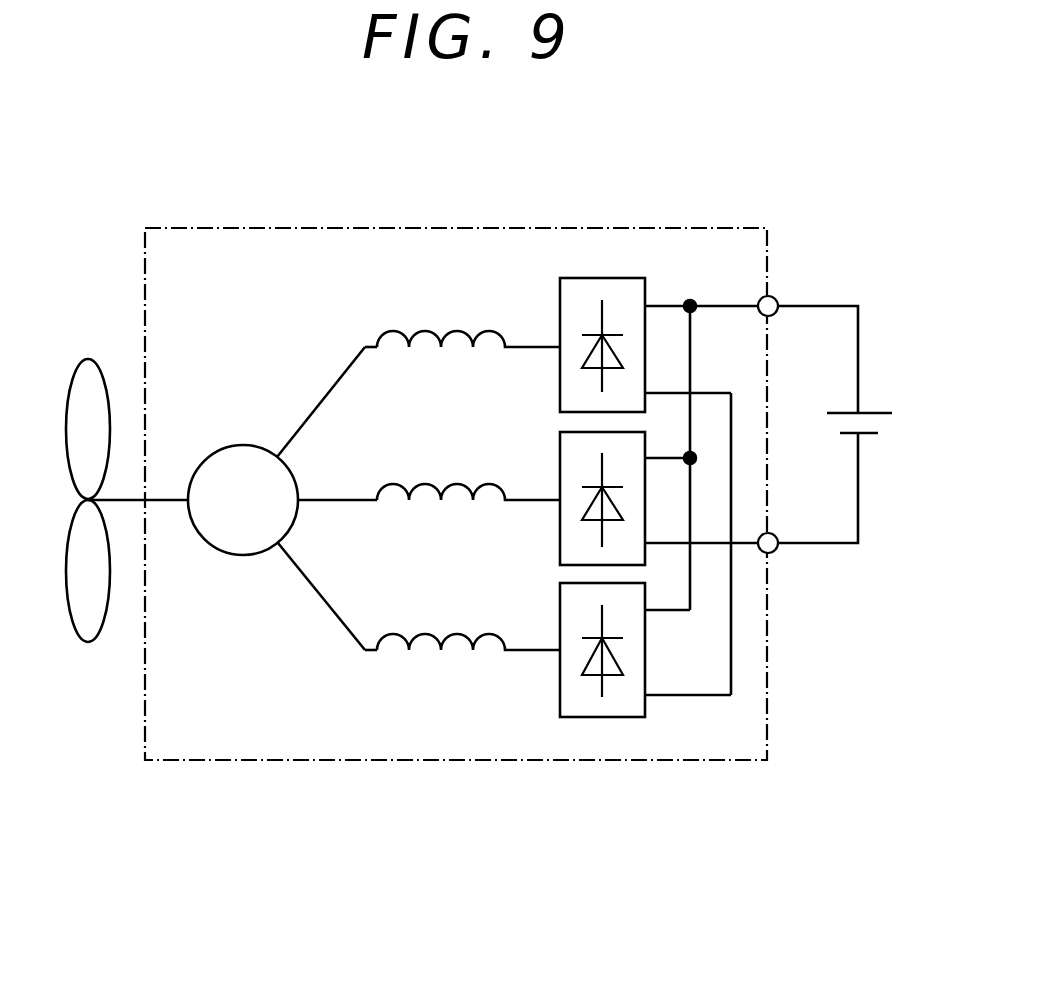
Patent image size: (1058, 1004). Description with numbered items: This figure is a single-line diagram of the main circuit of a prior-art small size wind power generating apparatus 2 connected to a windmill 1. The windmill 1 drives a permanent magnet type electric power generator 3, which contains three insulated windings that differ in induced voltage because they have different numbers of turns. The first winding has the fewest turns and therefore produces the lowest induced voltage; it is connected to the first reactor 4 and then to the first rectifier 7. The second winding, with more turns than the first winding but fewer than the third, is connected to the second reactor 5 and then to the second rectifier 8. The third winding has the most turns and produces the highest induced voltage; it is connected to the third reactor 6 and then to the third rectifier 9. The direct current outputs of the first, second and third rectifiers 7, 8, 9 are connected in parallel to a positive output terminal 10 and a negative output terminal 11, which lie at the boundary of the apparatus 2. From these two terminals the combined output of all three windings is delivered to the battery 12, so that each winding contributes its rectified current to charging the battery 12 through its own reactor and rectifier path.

The windmill 1 is at (88, 358).
The small size wind power generating apparatus 2 is at (565, 762).
The permanent magnet type electric power generator 3 is at (243, 445).
The first reactor 4 is at (430, 331).
The second reactor 5 is at (432, 483).
The third reactor 6 is at (432, 634).
The first rectifier 7 is at (560, 301).
The second rectifier 8 is at (560, 530).
The third rectifier 9 is at (560, 690).
The positive output terminal 10 is at (775, 298).
The negative output terminal 11 is at (777, 550).
The battery 12 is at (876, 412).